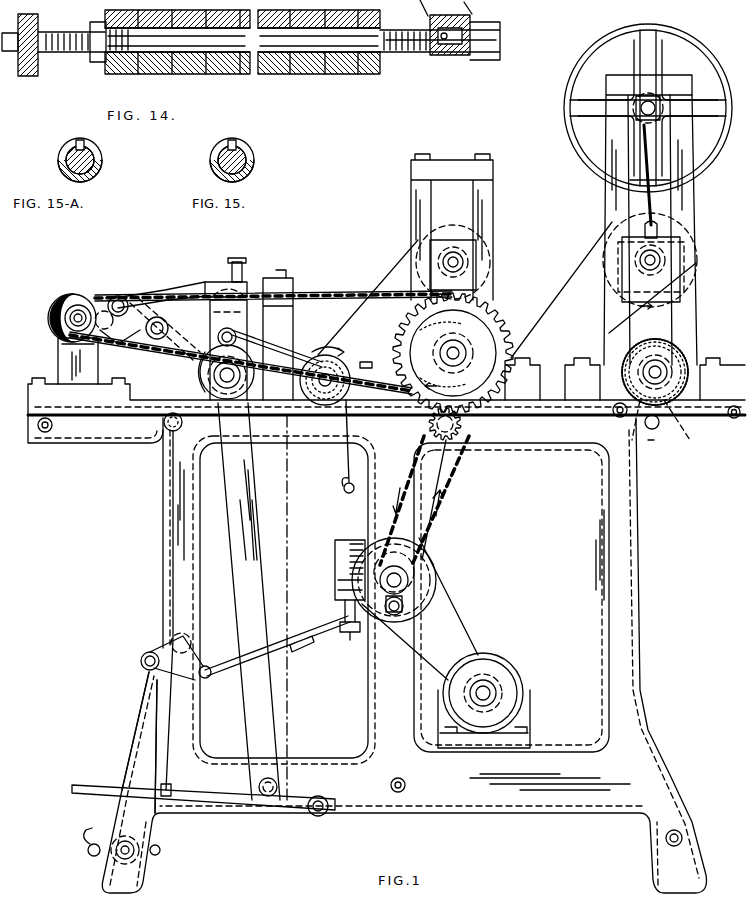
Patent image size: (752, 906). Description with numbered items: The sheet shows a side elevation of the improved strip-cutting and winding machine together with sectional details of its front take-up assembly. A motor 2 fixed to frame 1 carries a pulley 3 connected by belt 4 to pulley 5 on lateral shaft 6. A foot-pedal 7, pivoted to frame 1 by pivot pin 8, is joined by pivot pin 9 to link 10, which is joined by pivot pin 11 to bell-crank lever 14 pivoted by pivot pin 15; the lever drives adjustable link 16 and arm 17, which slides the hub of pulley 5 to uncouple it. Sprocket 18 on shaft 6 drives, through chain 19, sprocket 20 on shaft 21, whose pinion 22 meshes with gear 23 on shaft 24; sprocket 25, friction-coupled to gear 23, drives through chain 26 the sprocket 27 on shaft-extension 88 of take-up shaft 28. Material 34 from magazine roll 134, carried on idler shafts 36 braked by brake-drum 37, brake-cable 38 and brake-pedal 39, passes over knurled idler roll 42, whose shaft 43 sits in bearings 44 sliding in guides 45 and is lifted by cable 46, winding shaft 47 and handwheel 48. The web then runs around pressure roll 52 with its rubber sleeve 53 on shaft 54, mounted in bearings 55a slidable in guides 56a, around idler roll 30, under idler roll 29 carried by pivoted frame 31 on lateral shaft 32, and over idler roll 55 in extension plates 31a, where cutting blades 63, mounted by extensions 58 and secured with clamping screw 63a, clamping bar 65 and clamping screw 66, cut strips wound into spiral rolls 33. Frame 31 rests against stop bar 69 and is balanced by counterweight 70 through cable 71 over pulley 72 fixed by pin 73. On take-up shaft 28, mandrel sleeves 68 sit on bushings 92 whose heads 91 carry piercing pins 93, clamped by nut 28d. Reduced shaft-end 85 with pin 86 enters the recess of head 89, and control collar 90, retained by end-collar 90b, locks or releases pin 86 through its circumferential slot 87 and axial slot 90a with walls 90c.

In FIG. 1, the frame 1 is at (623, 611).
In FIG. 1, the motor 2 is at (522, 674).
In FIG. 1, the pulley 3 is at (494, 694).
In FIG. 1, the belt 4 is at (450, 607).
In FIG. 1, the pulley 5 is at (424, 568).
In FIG. 1, the lateral shaft 6 is at (410, 580).
In FIG. 1, the foot-pedal 7 is at (90, 836).
In FIG. 1, the pivot pin 8 is at (122, 854).
In FIG. 1, the pivot pin 9 is at (160, 848).
In FIG. 1, the link 10 is at (148, 688).
In FIG. 1, the pivot pin 11 is at (142, 660).
In FIG. 1, the bell-crank lever 14 is at (200, 658).
In FIG. 14, the pivot pin 15 is at (448, 66).
In FIG. 1, the pivot pin 15 is at (190, 638).
In FIG. 14, the adjustable link 16 is at (310, 76).
In FIG. 1, the adjustable link 16 is at (210, 676).
In FIG. 1, the arm 17 is at (420, 612).
In FIG. 1, the sprocket 18 is at (400, 538).
In FIG. 1, the chain 19 is at (452, 480).
In FIG. 1, the sprocket 20 is at (416, 458).
In FIG. 1, the shaft 21 is at (460, 430).
In FIG. 1, the pinion 22 is at (432, 428).
In FIG. 1, the gear 23 is at (474, 402).
In FIG. 1, the shaft 24 is at (460, 352).
In FIG. 1, the sprocket 25 is at (372, 366).
In FIG. 1, the chain 26 is at (360, 300).
In FIG. 1, the sprocket 27 is at (112, 322).
In FIG. 14, the take-up shaft 28 is at (56, 56).
In FIG. 14, the nut 28d is at (96, 62).
In FIG. 1, the idler roll 29 is at (250, 384).
In FIG. 1, the idler roll 30 is at (340, 366).
In FIG. 1, the frame 31 is at (236, 528).
In FIG. 1, the forward extension plates 31a is at (158, 344).
In FIG. 1, the lateral shaft 32 is at (280, 786).
In FIG. 1, the spiral rolls 33 is at (72, 294).
In FIG. 1, the material 34 is at (198, 382).
In FIG. 1, the idler shafts 36 is at (674, 372).
In FIG. 1, the brake-drum 37 is at (690, 362).
In FIG. 1, the brake-cable 38 is at (162, 545).
In FIG. 1, the brake-pedal 39 is at (612, 410).
In FIG. 1, the knurled idler roll 42 is at (690, 252).
In FIG. 1, the shaft 43 is at (666, 260).
In FIG. 1, the bearings 44 is at (640, 283).
In FIG. 1, the vertical guides 45 is at (682, 196).
In FIG. 1, the lifting cable 46 is at (612, 184).
In FIG. 1, the winding shaft 47 is at (652, 100).
In FIG. 1, the handwheel 48 is at (708, 64).
In FIG. 1, the pressure roll 52 is at (484, 264).
In FIG. 1, the sleeve 53 is at (488, 277).
In FIG. 1, the shaft 54 is at (462, 262).
In FIG. 1, the idler roll 55 is at (168, 324).
In FIG. 1, the bearings 55a is at (440, 255).
In FIG. 1, the guides 56a is at (484, 76).
In FIG. 1, the cylindrical extensions 58 is at (118, 296).
In FIG. 1, the cutting blades 63 is at (118, 340).
In FIG. 1, the clamping screw 63a is at (244, 258).
In FIG. 1, the clamping bar 65 is at (175, 288).
In FIG. 1, the clamping screw 66 is at (206, 282).
In FIG. 14, the mandrel sleeves 68 is at (314, 66).
In FIG. 1, the stop bar 69 is at (292, 428).
In FIG. 1, the counterweight 70 is at (336, 542).
In FIG. 1, the cable 71 is at (277, 348).
In FIG. 1, the pulley 72 is at (290, 335).
In FIG. 1, the pin 73 is at (218, 337).
In FIG. 14, the reduced shaft-end 85 is at (454, 52).
In FIG. 15-A, the reduced shaft-end 85 is at (62, 164).
In FIG. 15, the reduced shaft-end 85 is at (212, 158).
In FIG. 14, the pin 86 is at (442, 52).
In FIG. 15-A, the pin 86 is at (86, 144).
In FIG. 15, the pin 86 is at (236, 140).
In FIG. 15-A, the slot 87 is at (66, 156).
In FIG. 15, the slot 87 is at (246, 148).
In FIG. 14, the shaft-extension 88 is at (498, 28).
In FIG. 1, the shaft-extension 88 is at (52, 324).
In FIG. 15-A, the head 89 is at (100, 170).
In FIG. 15, the head 89 is at (214, 170).
In FIG. 15-A, the control collar 90 is at (100, 158).
In FIG. 15, the control collar 90 is at (216, 138).
In FIG. 15-A, the slot 90a is at (84, 134).
In FIG. 15, the slot 90a is at (252, 158).
In FIG. 14, the end-collar 90b is at (480, 50).
In FIG. 14, the walls 90c is at (452, 62).
In FIG. 15-A, the walls 90c is at (100, 152).
In FIG. 15, the walls 90c is at (256, 166).
In FIG. 14, the head 91 is at (305, 70).
In FIG. 14, the bushing 92 is at (252, 70).
In FIG. 14, the piercing pins 93 is at (346, 70).
In FIG. 1, the magazine roll 134 is at (664, 434).